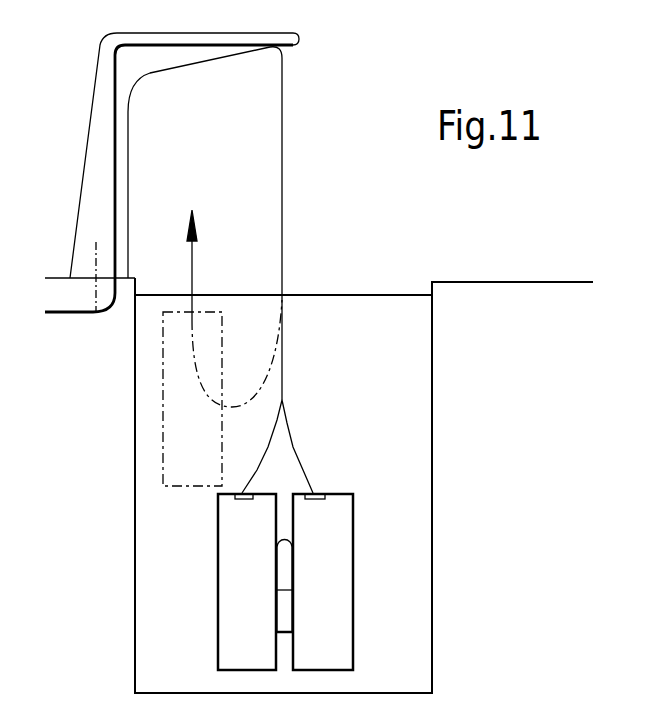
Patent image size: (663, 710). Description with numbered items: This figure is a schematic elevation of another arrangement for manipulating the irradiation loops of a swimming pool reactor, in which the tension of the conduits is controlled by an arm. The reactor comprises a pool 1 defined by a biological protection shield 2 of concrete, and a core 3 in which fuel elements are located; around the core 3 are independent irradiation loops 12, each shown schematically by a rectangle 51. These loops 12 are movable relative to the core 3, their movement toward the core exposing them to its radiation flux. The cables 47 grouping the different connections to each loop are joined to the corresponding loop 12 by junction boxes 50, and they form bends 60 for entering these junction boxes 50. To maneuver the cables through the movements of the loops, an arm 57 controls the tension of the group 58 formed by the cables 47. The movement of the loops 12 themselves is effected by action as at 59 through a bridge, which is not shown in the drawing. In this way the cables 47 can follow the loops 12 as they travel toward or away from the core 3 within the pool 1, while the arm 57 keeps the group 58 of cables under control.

The pool 1 is at (378, 365).
The biological protection shield 2 is at (432, 363).
The core 3 is at (280, 540).
The irradiation loop 12 is at (342, 627).
The cable 47 is at (303, 473).
The junction box 50 is at (242, 497).
The rectangle 51 is at (178, 487).
The arm 57 is at (83, 190).
The group 58 is at (287, 163).
The action 59 is at (194, 277).
The bend 60 is at (247, 408).